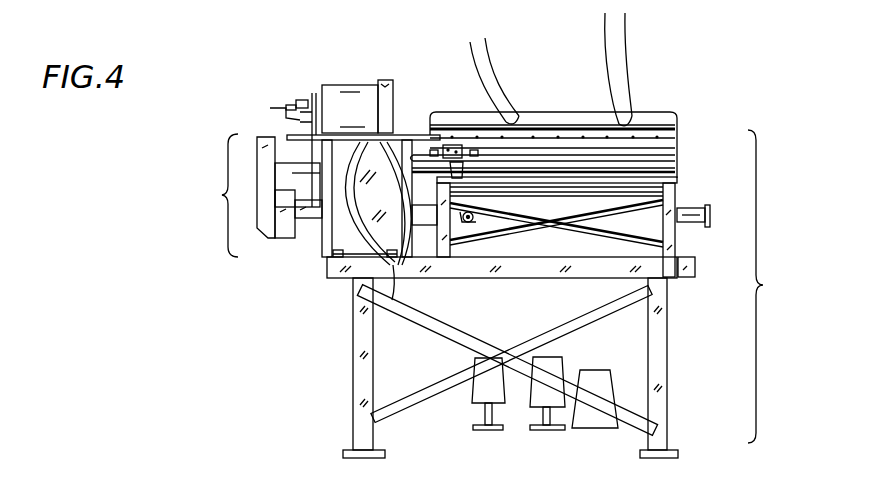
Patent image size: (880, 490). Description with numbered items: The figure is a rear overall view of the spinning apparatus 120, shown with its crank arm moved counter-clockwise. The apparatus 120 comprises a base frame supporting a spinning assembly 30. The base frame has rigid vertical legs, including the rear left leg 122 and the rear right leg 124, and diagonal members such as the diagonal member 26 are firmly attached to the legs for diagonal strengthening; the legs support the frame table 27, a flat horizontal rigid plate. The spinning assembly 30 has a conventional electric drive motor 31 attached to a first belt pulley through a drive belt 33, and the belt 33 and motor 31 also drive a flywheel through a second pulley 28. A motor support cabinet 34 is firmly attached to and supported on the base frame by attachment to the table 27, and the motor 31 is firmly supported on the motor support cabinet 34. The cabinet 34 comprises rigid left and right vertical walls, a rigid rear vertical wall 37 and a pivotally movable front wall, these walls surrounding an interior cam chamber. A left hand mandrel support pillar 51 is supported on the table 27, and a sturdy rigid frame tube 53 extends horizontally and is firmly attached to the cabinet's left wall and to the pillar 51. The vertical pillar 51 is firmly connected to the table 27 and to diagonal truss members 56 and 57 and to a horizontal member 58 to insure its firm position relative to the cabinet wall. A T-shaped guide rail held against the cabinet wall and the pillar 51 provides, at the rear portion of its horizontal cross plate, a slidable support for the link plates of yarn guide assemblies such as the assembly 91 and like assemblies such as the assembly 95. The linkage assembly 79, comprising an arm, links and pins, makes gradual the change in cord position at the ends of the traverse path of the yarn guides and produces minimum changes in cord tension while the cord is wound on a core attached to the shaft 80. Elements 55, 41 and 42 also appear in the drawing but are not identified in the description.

The electric drive motor 31 is at (346, 103).
The drive belt 33 is at (287, 120).
The spinning assembly 30 is at (257, 195).
The motor support cabinet 34 is at (325, 242).
The rear vertical wall 37 is at (350, 233).
The linkage assembly 79 is at (443, 147).
The shaft 80 is at (567, 163).
The assembly 91 is at (512, 108).
The assembly 95 is at (560, 163).
The horizontal member 58 is at (640, 200).
The left hand mandrel support pillar 51 is at (672, 190).
The diagonal truss member 56 is at (495, 235).
The diagonal truss member 57 is at (603, 235).
The frame tube 53 is at (653, 218).
The frame table 27 is at (692, 272).
The spinning apparatus 120 is at (773, 286).
The second pulley 28 is at (350, 368).
The rear right leg 124 is at (653, 360).
The brace 55 is at (507, 360).
The diagonal member 26 is at (488, 318).
The rear left leg 122 is at (372, 422).
The container 42 is at (478, 400).
The container 41 is at (545, 360).